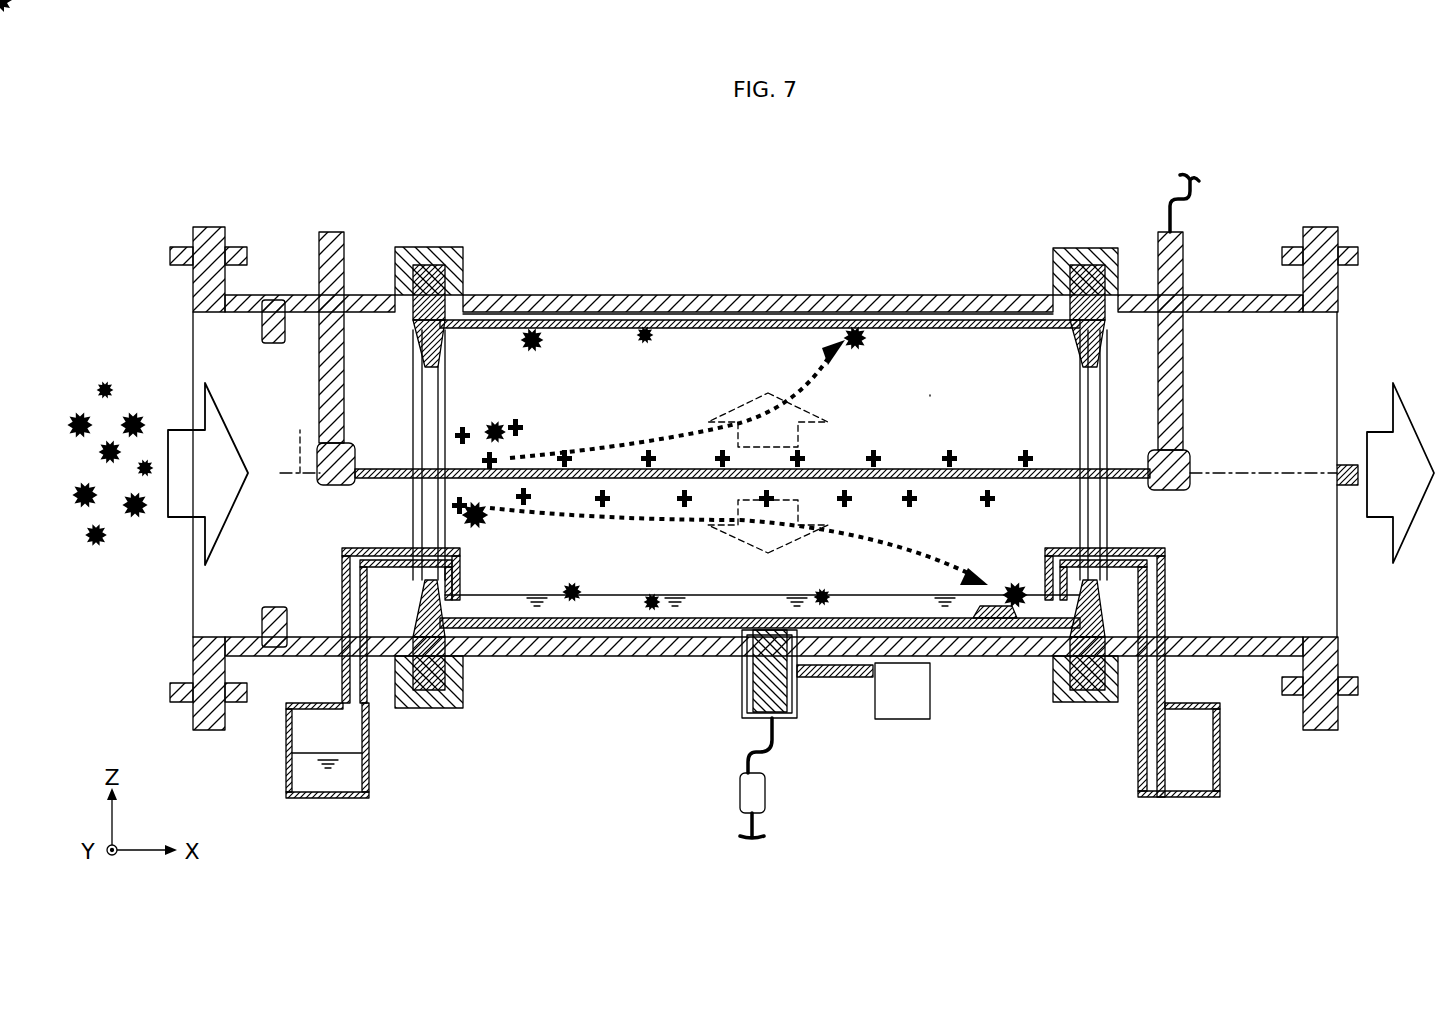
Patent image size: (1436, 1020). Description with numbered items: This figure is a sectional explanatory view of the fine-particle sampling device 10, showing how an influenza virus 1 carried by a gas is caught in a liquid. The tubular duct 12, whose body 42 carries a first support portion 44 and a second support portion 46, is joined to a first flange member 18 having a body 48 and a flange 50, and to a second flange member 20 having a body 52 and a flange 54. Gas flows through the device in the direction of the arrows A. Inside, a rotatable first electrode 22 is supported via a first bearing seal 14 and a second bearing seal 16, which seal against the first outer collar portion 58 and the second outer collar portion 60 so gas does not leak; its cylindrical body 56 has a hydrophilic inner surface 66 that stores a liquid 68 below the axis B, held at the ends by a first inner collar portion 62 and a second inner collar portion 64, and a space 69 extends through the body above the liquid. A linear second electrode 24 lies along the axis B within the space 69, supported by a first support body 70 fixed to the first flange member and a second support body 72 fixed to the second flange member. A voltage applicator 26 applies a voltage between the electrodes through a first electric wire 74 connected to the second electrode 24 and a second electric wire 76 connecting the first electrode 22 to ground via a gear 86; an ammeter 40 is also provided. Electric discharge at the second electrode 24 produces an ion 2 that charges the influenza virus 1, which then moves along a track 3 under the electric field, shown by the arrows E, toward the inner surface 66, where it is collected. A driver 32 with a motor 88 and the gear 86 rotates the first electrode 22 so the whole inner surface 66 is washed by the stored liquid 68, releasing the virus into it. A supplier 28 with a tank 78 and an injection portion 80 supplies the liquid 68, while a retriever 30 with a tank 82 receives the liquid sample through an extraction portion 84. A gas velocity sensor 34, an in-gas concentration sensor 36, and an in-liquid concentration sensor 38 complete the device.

The fine-particle sampling device 10 is at (141, 153).
The duct 12 is at (873, 294).
The first bearing seal 14 is at (454, 439).
The second bearing seal 16 is at (1057, 436).
The first flange member 18 is at (277, 288).
The second flange member 20 is at (1255, 288).
The first electrode 22 is at (703, 294).
The second electrode 24 is at (584, 468).
The voltage applicator 26 is at (1097, 417).
The supplier 28 is at (417, 697).
The retriever 30 is at (1090, 697).
The driver 32 is at (808, 734).
The gas velocity sensor 34 is at (265, 625).
The in-gas concentration sensor 36 is at (265, 320).
The in-liquid concentration sensor 38 is at (992, 600).
The ammeter 40 is at (748, 796).
The body 42 is at (799, 294).
The first support portion 44 is at (448, 258).
The second support portion 46 is at (1061, 270).
The body 48 is at (371, 294).
The flange 50 is at (216, 240).
The body 52 is at (1225, 294).
The flange 54 is at (1320, 240).
The body 56 is at (613, 318).
The first outer collar portion 58 is at (458, 270).
The second outer collar portion 60 is at (1070, 293).
The first inner collar portion 62 is at (447, 323).
The second inner collar portion 64 is at (1075, 338).
The inner surface 66 is at (637, 600).
The liquid 68 is at (305, 775).
The space 69 is at (930, 395).
The first support body 70 is at (333, 240).
The second support body 72 is at (1166, 284).
The first electric wire 74 is at (1169, 212).
The second electric wire 76 is at (740, 752).
The tank 78 is at (328, 800).
The injection portion 80 is at (456, 592).
The tank 82 is at (1181, 799).
The extraction portion 84 is at (1010, 612).
The gear 86 is at (780, 706).
The motor 88 is at (905, 697).
The influenza virus 1 is at (652, 598).
The ion 2 is at (513, 432).
The track 3 is at (645, 447).
The arrows A is at (182, 520).
The axis B is at (300, 440).
The arrows E is at (752, 392).